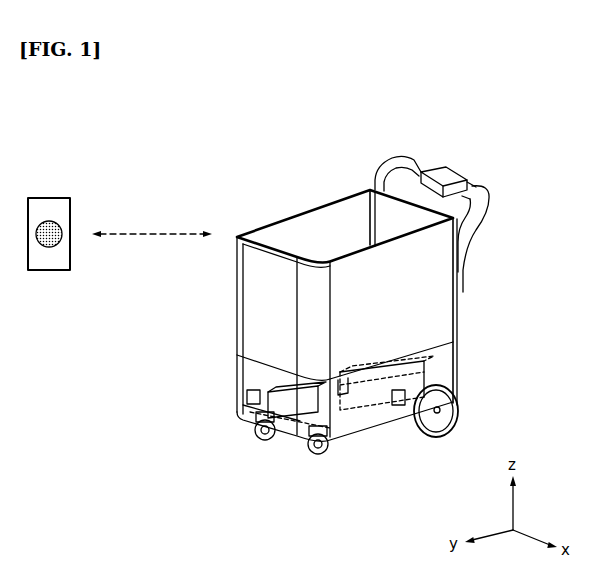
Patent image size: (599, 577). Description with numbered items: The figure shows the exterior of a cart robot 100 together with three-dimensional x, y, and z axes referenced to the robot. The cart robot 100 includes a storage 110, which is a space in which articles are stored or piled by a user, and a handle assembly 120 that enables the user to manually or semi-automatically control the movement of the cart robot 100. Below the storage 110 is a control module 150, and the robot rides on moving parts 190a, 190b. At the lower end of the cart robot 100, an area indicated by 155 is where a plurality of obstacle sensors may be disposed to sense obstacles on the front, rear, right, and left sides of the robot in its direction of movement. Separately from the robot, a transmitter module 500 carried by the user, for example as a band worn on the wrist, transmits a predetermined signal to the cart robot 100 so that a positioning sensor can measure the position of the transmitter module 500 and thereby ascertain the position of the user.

The cart robot 100 is at (509, 88).
The storage 110 is at (321, 221).
The handle assembly 120 is at (445, 178).
The control module 150 is at (224, 370).
The obstacle sensor area 155 is at (257, 406).
The moving parts 190a is at (308, 452).
The moving parts 190b is at (428, 435).
The transmitter module 500 is at (48, 197).